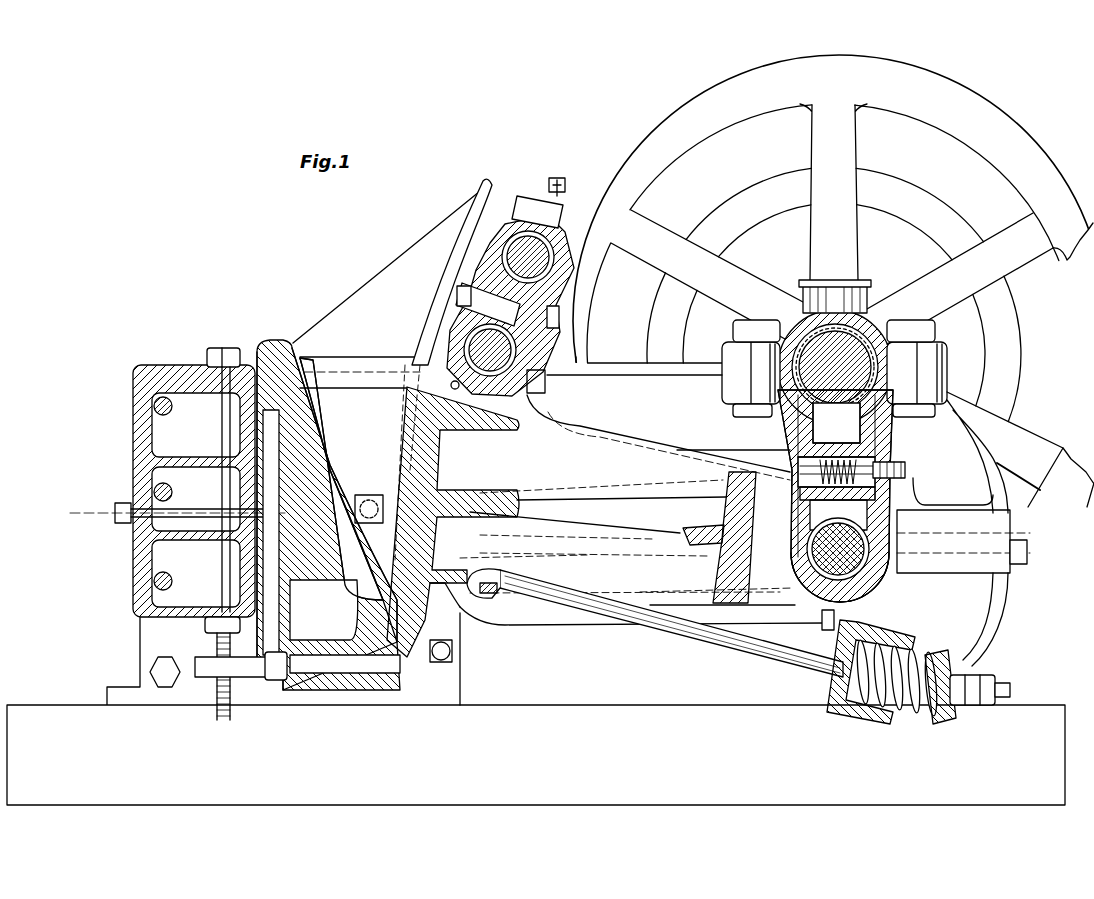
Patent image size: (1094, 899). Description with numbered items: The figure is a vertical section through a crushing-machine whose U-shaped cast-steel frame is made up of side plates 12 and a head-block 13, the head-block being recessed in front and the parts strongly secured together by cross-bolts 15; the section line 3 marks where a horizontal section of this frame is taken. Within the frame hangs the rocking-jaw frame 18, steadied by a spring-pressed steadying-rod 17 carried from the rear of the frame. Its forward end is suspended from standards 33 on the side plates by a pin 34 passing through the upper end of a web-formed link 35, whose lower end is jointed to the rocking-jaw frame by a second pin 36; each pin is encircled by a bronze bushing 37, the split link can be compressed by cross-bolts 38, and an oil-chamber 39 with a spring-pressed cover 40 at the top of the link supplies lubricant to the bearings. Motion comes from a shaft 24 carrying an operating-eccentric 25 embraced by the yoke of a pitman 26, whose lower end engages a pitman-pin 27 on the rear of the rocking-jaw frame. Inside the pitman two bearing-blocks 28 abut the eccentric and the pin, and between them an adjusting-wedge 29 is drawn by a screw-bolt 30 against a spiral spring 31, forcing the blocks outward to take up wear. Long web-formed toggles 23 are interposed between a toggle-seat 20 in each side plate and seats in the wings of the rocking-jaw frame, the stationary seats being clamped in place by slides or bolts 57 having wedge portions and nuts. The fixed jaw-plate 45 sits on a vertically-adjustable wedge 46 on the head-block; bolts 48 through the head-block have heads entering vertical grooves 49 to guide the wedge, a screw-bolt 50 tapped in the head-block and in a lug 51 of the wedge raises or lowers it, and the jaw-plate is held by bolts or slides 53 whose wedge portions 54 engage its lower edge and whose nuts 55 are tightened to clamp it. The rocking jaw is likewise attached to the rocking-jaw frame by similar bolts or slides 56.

The section line 3 is at (101, 493).
The side plates 12 is at (536, 585).
The head-block 13 is at (170, 372).
The cross-bolts 15 is at (172, 406).
The spring-pressed steadying-rod 17 is at (745, 647).
The rocking-jaw frame 18 is at (626, 532).
The toggle-seat 20 is at (905, 535).
The toggles 23 is at (878, 558).
The shaft 24 is at (870, 313).
The operating-eccentric 25 is at (925, 355).
The pitman 26 is at (892, 433).
The pitman-pin 27 is at (836, 588).
The bearing-blocks 28 is at (796, 429).
The adjusting-wedge 29 is at (803, 492).
The screw-bolt 30 is at (719, 536).
The spiral spring 31 is at (421, 447).
The standards 33 is at (391, 263).
The pin 34 is at (549, 246).
The web-formed link 35 is at (480, 297).
The second pin 36 is at (548, 364).
The bushing 37 is at (548, 272).
The cross-bolts 38 is at (470, 313).
The oil-chamber 39 is at (560, 212).
The spring-pressed cover 40 is at (557, 186).
The fixed jaw-plate 45 is at (308, 428).
The vertically-adjustable wedge 46 is at (271, 345).
The bolts 48 is at (128, 521).
The vertical grooves 49 is at (274, 457).
The screw-bolt 50 is at (224, 585).
The lug 51 is at (206, 662).
The bolts or slides 53 is at (345, 665).
The wedge portions 54 is at (388, 668).
The nuts 55 is at (266, 667).
The bolts or slides 56 is at (460, 386).
The slides or bolts 57 is at (950, 552).